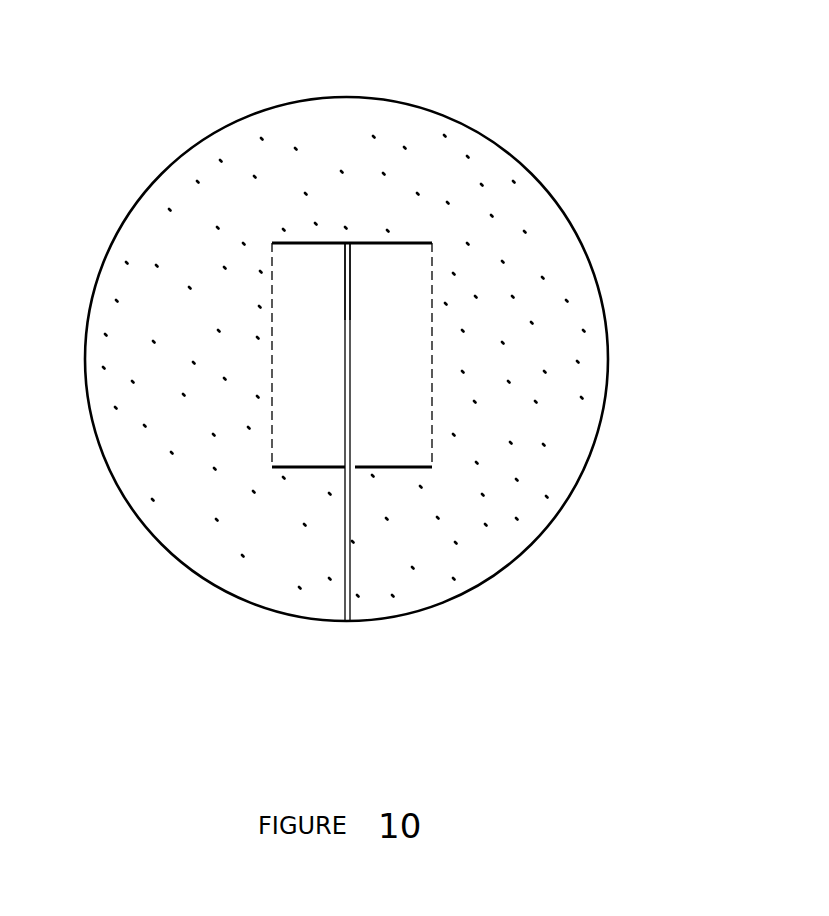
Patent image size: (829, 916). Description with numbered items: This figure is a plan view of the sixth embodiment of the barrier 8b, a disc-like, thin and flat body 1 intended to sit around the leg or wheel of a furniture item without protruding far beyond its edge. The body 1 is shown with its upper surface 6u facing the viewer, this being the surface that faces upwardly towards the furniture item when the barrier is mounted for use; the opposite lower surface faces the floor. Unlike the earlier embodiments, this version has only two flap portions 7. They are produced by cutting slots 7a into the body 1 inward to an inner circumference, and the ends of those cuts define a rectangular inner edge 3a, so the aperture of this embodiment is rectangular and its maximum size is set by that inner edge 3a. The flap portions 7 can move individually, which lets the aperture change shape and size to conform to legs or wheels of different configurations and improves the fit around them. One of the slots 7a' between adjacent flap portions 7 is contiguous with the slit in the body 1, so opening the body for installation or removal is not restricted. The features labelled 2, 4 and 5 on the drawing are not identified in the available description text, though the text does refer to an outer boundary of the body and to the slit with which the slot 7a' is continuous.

The body 1 is at (118, 263).
The outer surface 2 is at (84, 399).
The inner edge 3a is at (432, 447).
The body region 4 is at (182, 528).
The web 5 is at (352, 598).
The upper surface 6u is at (268, 578).
The flap portions 7 is at (400, 380).
The radial slots 7a is at (429, 178).
The slot contiguous with the slit 7a' is at (486, 242).
The barrier 8b is at (157, 78).